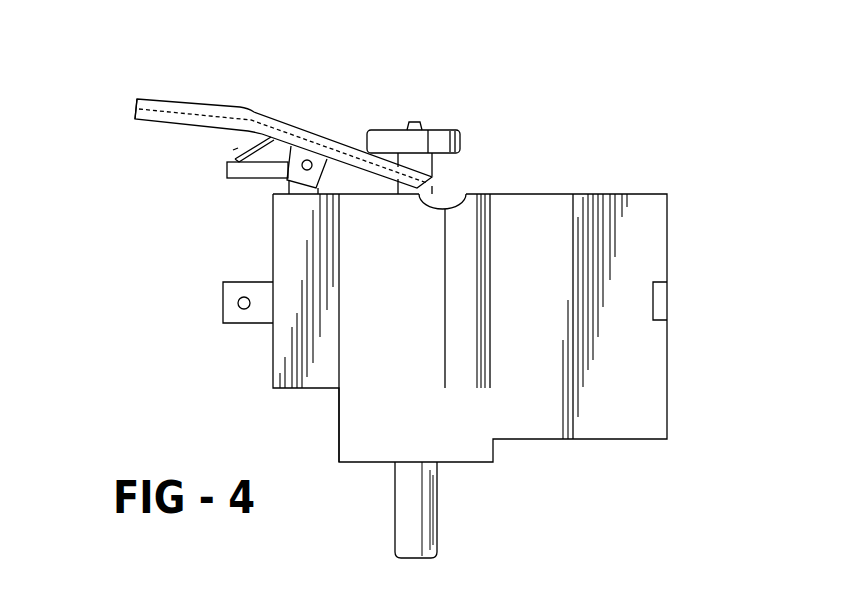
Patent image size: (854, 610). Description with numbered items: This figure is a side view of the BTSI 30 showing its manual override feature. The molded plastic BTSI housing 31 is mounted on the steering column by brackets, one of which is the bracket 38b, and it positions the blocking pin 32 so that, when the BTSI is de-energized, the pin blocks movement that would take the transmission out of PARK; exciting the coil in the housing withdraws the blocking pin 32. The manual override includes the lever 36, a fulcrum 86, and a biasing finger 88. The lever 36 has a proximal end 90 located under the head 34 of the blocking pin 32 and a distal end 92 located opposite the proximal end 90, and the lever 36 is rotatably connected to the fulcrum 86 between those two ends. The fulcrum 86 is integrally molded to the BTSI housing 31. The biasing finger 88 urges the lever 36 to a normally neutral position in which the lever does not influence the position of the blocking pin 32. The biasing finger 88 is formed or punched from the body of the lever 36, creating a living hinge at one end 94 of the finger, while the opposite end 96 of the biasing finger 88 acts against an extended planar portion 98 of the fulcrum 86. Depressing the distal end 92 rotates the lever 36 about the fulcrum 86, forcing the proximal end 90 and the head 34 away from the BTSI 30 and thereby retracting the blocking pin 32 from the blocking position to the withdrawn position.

The BTSI 30 is at (675, 186).
The BTSI housing 31 is at (666, 262).
The blocking pin 32 is at (430, 503).
The head 34 is at (462, 143).
The lever 36 is at (208, 106).
The bracket 38b is at (225, 308).
The fulcrum 86 is at (313, 160).
The biasing finger 88 is at (233, 150).
The proximal end 90 is at (450, 202).
The distal end 92 is at (138, 113).
The end of the finger 94 is at (275, 128).
The opposite end of the biasing finger 96 is at (230, 157).
The extended planar portion 98 is at (242, 173).